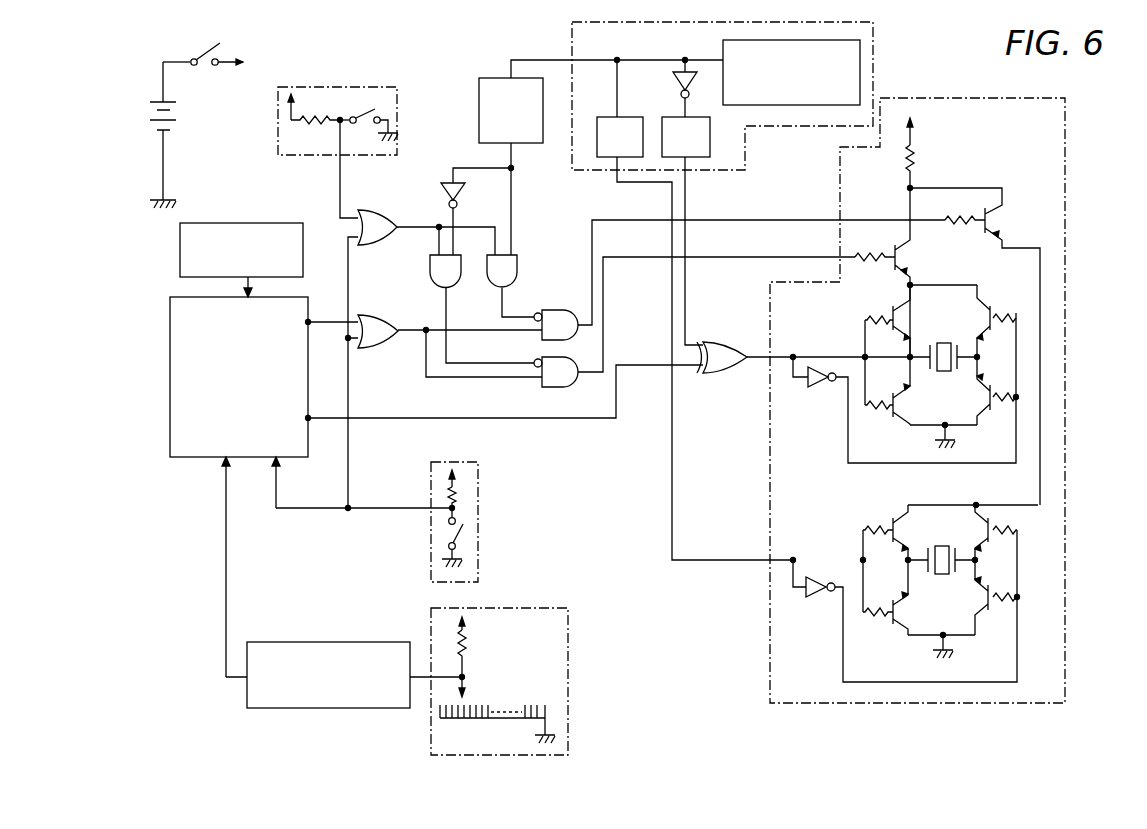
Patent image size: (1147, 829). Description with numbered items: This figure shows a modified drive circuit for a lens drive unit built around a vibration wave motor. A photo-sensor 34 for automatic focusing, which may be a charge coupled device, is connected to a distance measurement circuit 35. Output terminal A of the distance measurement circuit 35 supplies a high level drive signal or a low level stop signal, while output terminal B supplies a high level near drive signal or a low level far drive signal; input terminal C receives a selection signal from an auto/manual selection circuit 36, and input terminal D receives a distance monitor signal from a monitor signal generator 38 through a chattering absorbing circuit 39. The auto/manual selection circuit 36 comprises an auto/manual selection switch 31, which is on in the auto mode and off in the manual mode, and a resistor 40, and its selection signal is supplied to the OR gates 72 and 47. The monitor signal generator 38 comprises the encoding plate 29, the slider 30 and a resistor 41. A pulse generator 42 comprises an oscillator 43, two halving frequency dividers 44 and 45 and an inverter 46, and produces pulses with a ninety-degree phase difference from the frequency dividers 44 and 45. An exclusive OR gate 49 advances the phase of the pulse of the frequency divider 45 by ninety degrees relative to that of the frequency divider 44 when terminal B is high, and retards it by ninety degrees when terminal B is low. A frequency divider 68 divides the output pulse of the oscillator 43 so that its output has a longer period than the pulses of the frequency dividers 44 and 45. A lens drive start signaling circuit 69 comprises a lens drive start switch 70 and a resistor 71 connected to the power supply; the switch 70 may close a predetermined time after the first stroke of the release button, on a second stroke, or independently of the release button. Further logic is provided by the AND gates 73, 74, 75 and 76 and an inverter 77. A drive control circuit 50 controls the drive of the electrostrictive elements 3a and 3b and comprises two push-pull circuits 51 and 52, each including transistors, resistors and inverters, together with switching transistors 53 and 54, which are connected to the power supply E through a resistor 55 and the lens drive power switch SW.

The electrostrictive element 3a is at (906, 373).
The electrostrictive element 3b is at (915, 593).
The encoding plate 29 is at (456, 720).
The slider 30 is at (470, 684).
The auto/manual selection switch 31 is at (467, 524).
The photo-sensor 34 is at (248, 223).
The distance measurement circuit 35 is at (170, 360).
The auto/manual selection circuit 36 is at (480, 470).
The monitor signal generator 38 is at (570, 654).
The chattering absorbing circuit 39 is at (306, 708).
The resistor 40 is at (464, 494).
The resistor 41 is at (472, 641).
The pulse generator 42 is at (875, 30).
The oscillator 43 is at (860, 70).
The 1-to-2 frequency divider 44 is at (603, 117).
The 1-to-2 frequency divider 45 is at (667, 117).
The inverter 46 is at (692, 86).
The OR gate 47 is at (375, 315).
The exclusive OR gate 49 is at (721, 342).
The drive control circuit 50 is at (1068, 126).
The push-pull circuit 51 is at (1000, 271).
The push-pull circuit 52 is at (1022, 545).
The switching transistor 53 is at (1000, 221).
The switching transistor 54 is at (906, 262).
The resistor 55 is at (914, 159).
The frequency divider 68 is at (480, 78).
The lens drive start signaling circuit 69 is at (335, 87).
The lens drive start switch 70 is at (368, 110).
The resistor 71 is at (304, 118).
The OR gate 72 is at (378, 210).
The AND gate 73 is at (430, 262).
The AND gate 74 is at (517, 268).
The AND gate 75 is at (560, 387).
The AND gate 76 is at (562, 310).
The inverter 77 is at (460, 192).
The power supply E is at (178, 114).